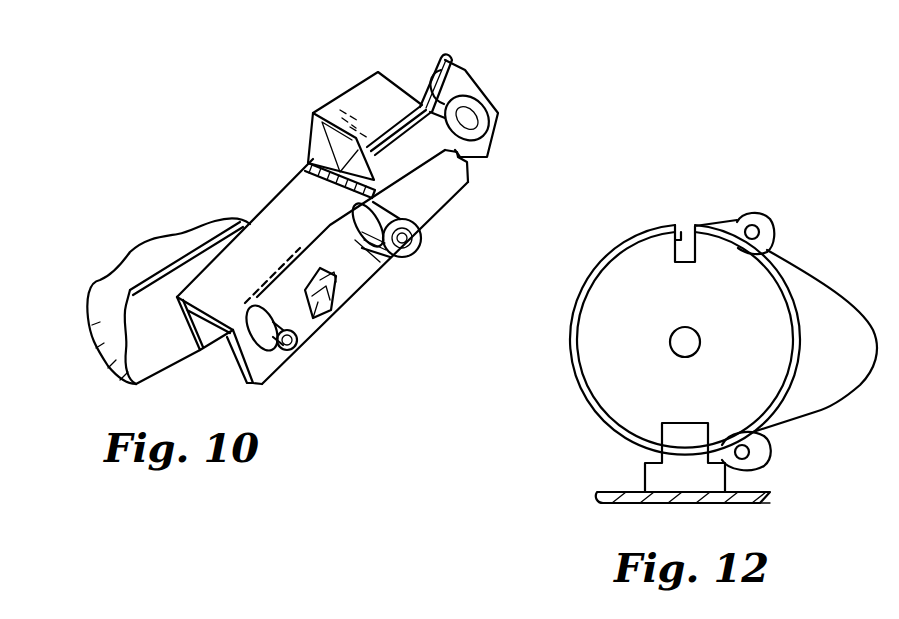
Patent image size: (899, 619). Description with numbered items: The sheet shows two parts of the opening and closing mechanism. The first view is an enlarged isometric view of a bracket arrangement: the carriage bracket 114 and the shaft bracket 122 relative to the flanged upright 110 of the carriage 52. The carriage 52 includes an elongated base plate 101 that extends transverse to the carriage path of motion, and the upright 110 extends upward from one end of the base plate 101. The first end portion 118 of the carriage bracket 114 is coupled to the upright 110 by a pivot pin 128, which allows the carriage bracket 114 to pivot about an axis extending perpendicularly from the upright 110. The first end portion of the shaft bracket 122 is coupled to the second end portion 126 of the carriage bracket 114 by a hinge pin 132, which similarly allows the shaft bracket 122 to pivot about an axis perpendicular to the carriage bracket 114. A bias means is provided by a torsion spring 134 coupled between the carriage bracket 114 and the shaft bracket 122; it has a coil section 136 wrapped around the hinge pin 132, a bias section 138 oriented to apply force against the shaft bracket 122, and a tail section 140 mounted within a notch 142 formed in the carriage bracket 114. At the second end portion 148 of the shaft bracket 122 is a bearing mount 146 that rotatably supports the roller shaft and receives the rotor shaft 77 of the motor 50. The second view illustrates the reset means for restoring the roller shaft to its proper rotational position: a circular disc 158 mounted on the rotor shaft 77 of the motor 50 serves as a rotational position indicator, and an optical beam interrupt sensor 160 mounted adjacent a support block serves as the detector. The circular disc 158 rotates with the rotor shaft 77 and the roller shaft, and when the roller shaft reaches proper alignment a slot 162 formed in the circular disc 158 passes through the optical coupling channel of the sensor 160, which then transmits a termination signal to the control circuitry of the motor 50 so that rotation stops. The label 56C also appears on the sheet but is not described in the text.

In FIG. 10, the base plate 101 is at (104, 334).
In FIG. 12, the base plate 101 is at (741, 498).
In FIG. 10, the flanged upright 110 is at (160, 378).
In FIG. 10, the carriage bracket 114 is at (258, 200).
In FIG. 10, the first end portion 118 is at (262, 382).
In FIG. 10, the shaft bracket 122 is at (372, 72).
In FIG. 10, the second end portion 126 is at (376, 252).
In FIG. 10, the pivot pin 128 is at (293, 348).
In FIG. 10, the hinge pin 132 is at (410, 240).
In FIG. 10, the torsion spring 134 is at (318, 148).
In FIG. 10, the coil section 136 is at (308, 165).
In FIG. 10, the bias section 138 is at (340, 110).
In FIG. 10, the tail section 140 is at (325, 308).
In FIG. 10, the notch 142 is at (340, 290).
In FIG. 10, the bearing mount 146 is at (440, 82).
In FIG. 10, the second end portion 148 is at (427, 62).
In FIG. 12, the motor 50 is at (800, 266).
In FIG. 12, the carriage 52 is at (616, 482).
In FIG. 12, the rotor shaft 77 is at (700, 337).
In FIG. 12, the circular disc 158 is at (590, 279).
In FIG. 12, the optical beam interrupt sensor 160 is at (683, 484).
In FIG. 12, the slot 162 is at (682, 240).
In FIG. 12, the cable section 56C is at (818, 0).